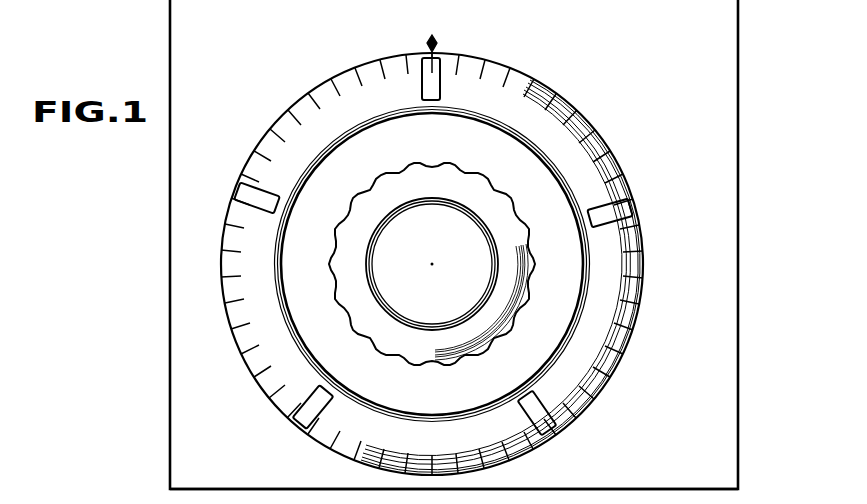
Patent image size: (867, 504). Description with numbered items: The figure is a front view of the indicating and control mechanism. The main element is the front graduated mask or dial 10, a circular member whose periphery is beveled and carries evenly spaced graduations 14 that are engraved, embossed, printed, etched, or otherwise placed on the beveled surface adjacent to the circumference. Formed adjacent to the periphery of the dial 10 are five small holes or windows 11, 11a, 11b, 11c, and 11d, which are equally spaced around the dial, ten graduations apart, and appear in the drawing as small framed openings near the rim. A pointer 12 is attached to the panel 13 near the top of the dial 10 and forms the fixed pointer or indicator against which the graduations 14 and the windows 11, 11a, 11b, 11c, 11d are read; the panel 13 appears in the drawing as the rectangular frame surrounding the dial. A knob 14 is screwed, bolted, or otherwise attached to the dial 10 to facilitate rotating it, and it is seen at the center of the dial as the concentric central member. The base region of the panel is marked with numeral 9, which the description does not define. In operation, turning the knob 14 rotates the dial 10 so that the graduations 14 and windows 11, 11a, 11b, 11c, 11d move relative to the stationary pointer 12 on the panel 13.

The base panel 9 is at (454, 496).
The front graduated mask or dial 10 is at (610, 160).
The small hole 11 is at (441, 70).
The small hole 11a is at (628, 207).
The small hole 11b is at (524, 430).
The small hole 11c is at (313, 428).
The small hole 11d is at (240, 192).
The pointer 12 is at (436, 37).
The panel 13 is at (730, 78).
The graduations 14 is at (323, 82).